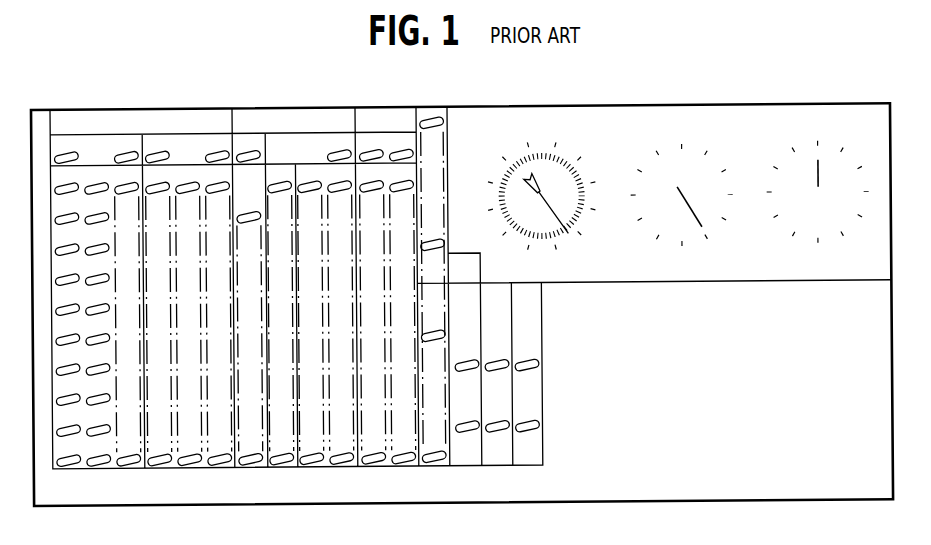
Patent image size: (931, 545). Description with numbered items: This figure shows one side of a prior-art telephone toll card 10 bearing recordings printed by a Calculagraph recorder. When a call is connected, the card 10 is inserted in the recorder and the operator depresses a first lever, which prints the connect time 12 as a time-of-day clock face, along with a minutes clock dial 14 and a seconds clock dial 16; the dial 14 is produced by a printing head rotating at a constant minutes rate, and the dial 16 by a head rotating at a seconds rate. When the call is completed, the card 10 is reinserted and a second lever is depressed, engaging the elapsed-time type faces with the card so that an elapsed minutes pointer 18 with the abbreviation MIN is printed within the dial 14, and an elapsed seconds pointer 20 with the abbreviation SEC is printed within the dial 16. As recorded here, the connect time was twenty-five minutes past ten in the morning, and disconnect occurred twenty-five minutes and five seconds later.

The telephone toll card 10 is at (740, 506).
The connect time 12 is at (558, 153).
The minutes clock dial 14 is at (657, 262).
The seconds clock dial 16 is at (840, 254).
The elapsed minutes pointer 18 is at (693, 222).
The elapsed seconds pointer 20 is at (818, 166).